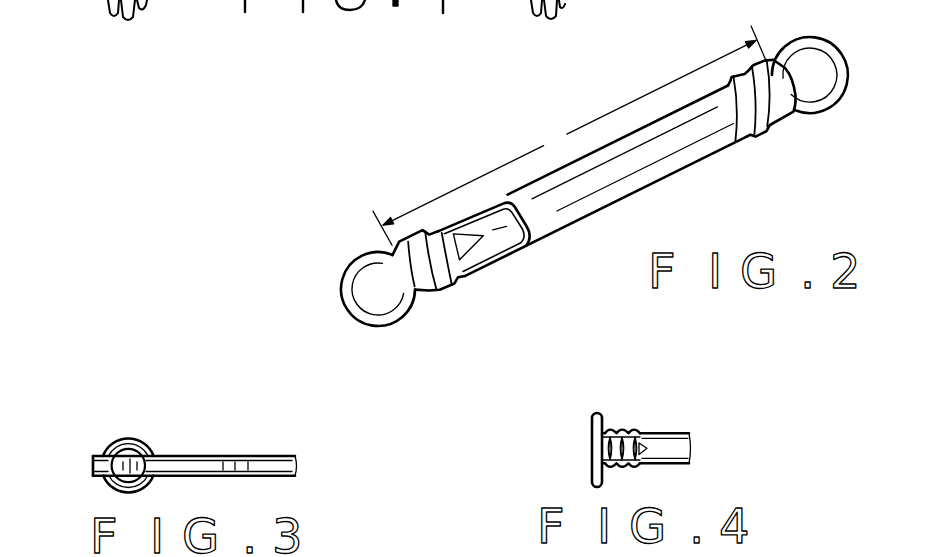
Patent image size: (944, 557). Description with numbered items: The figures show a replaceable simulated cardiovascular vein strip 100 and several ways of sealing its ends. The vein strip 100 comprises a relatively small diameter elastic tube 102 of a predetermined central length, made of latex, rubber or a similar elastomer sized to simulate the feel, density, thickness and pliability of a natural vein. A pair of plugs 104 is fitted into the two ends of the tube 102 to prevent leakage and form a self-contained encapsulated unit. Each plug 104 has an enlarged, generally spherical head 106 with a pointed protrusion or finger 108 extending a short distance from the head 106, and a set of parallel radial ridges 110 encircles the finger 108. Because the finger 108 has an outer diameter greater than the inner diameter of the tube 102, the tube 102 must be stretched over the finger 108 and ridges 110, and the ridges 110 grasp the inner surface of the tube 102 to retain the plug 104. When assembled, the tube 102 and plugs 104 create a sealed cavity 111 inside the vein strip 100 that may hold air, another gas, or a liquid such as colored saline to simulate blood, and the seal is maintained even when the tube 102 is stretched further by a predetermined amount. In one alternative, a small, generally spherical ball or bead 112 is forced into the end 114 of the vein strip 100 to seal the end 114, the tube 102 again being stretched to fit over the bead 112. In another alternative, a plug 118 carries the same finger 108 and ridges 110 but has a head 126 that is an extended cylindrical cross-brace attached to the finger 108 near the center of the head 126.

In FIG. 2, the simulated cardiovascular vein strip 100 is at (627, 88).
In FIG. 3, the simulated cardiovascular vein strip 100 is at (212, 437).
In FIG. 4, the simulated cardiovascular vein strip 100 is at (682, 422).
In FIG. 2, the elastic tube 102 is at (661, 150).
In FIG. 3, the elastic tube 102 is at (243, 452).
In FIG. 4, the elastic tube 102 is at (689, 463).
In FIG. 2, the plug 104 is at (344, 270).
In FIG. 3, the plug 104 is at (128, 465).
In FIG. 2, the spherical head 106 is at (382, 310).
In FIG. 2, the finger 108 is at (437, 288).
In FIG. 4, the finger 108 is at (644, 440).
In FIG. 2, the radial ridges 110 is at (458, 283).
In FIG. 4, the radial ridges 110 is at (618, 467).
In FIG. 2, the sealed cavity 111 is at (531, 222).
In FIG. 3, the bead 112 is at (137, 463).
In FIG. 3, the end 114 is at (86, 465).
In FIG. 4, the plug 118 is at (599, 400).
In FIG. 4, the cross-brace head 126 is at (595, 450).